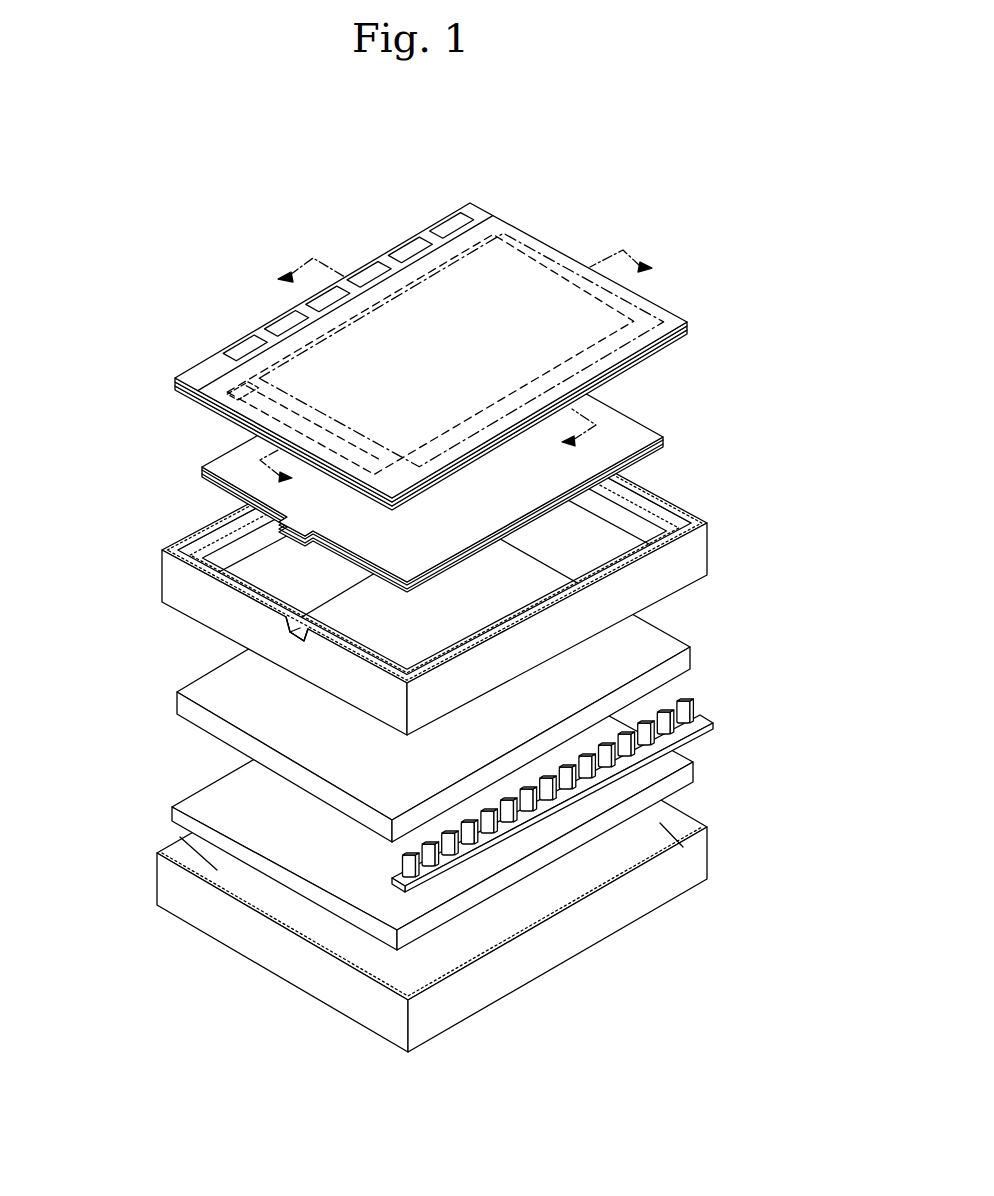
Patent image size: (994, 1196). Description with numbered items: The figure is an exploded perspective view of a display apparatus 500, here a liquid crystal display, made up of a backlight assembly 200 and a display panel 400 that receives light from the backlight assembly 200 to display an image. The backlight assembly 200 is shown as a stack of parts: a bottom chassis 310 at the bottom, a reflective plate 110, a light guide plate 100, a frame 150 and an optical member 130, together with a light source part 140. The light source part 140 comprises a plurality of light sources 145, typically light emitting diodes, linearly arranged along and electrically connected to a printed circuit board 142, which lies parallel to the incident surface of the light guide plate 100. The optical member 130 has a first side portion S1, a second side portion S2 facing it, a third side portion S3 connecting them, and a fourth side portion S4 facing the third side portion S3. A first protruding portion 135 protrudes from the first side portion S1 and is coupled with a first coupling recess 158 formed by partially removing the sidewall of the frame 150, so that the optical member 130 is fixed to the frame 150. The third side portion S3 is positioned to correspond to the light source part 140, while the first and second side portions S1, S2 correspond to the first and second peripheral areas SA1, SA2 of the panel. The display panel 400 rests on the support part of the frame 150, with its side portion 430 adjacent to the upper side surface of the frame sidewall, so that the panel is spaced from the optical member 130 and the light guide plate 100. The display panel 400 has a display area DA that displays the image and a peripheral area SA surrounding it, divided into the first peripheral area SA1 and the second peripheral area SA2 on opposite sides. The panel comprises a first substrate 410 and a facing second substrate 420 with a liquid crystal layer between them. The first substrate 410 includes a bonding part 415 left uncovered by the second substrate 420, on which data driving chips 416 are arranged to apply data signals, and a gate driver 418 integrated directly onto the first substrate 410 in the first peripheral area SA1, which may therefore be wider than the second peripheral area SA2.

The display apparatus 500 is at (435, 587).
The display panel 400 is at (487, 316).
The second substrate 420 is at (688, 325).
The first substrate 410 is at (688, 330).
The side portion 430 is at (672, 342).
The bonding part 415 is at (197, 365).
The data driving chips 416 is at (403, 250).
The gate driver 418 is at (258, 400).
The display area DA is at (558, 290).
The peripheral area SA is at (478, 122).
The first peripheral area SA1 is at (262, 410).
The second peripheral area SA2 is at (528, 237).
The backlight assembly 200 is at (435, 687).
The optical member 130 is at (192, 469).
The first side portion S1 is at (237, 492).
The second side portion S2 is at (650, 430).
The third side portion S3 is at (652, 455).
The fourth side portion S4 is at (185, 440).
The frame 150 is at (400, 562).
The first protruding portion 135 is at (265, 548).
The first coupling recess 158 is at (284, 621).
The light guide plate 100 is at (170, 704).
The reflective plate 110 is at (166, 808).
The light source part 140 is at (606, 790).
The printed circuit board 142 is at (691, 730).
The light sources 145 is at (689, 714).
The bottom chassis 310 is at (158, 851).